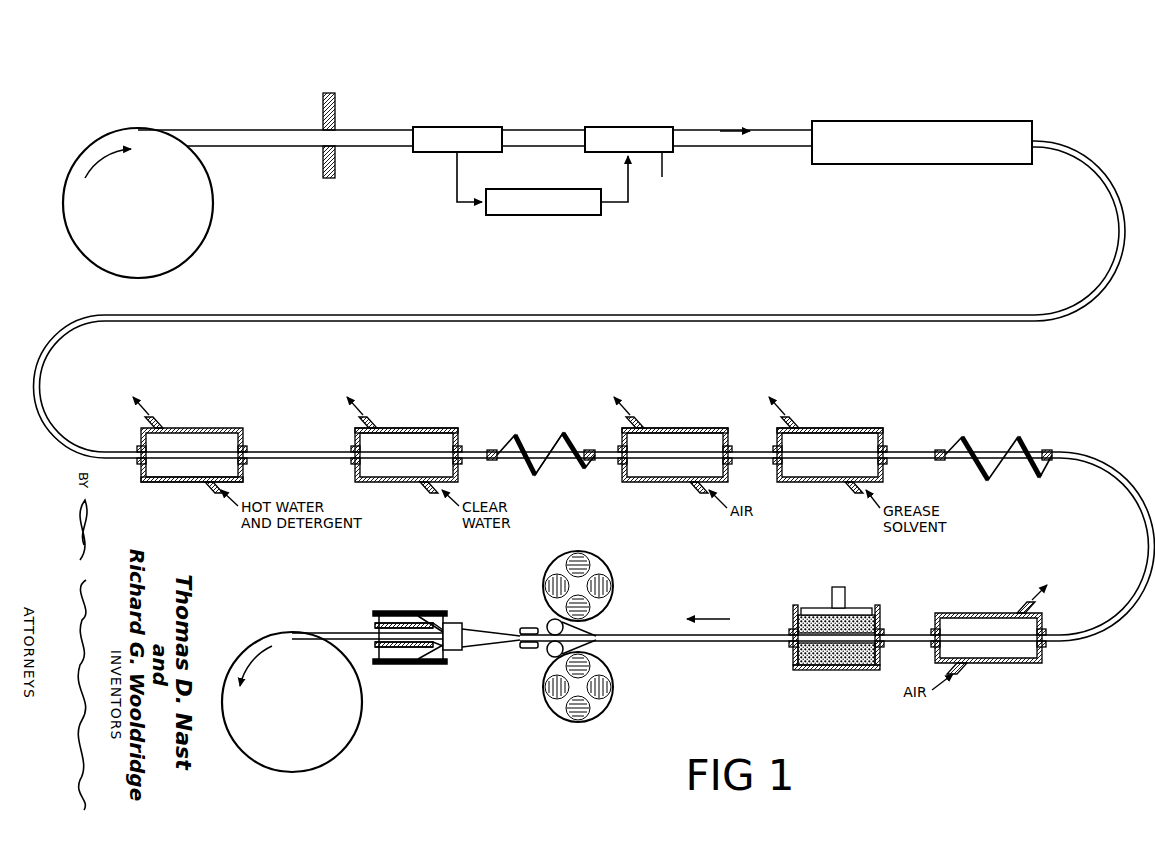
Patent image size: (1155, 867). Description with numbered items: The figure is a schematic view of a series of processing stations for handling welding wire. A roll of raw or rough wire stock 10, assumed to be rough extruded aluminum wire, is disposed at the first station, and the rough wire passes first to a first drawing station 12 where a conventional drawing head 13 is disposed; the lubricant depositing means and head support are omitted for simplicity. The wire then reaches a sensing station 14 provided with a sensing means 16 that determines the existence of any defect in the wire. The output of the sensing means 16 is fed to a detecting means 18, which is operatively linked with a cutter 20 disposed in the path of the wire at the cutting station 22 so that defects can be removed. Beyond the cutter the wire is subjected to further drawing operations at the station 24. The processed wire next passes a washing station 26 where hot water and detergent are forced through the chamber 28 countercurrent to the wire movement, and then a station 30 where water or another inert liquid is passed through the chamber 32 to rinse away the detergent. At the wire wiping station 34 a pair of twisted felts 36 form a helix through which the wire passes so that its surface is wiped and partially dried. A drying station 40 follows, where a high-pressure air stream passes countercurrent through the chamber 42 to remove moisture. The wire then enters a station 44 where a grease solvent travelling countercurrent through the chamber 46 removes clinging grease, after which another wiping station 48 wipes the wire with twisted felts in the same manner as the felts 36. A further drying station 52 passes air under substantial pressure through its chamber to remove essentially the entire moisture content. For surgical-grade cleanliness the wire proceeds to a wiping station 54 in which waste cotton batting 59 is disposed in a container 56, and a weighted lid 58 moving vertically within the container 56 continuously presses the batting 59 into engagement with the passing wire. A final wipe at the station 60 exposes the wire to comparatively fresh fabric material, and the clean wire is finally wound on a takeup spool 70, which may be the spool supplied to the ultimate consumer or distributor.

The wire stock 10 is at (198, 128).
The first drawing station 12 is at (347, 111).
The drawing head 13 is at (322, 108).
The sensing station 14 is at (475, 117).
The sensing means 16 is at (424, 155).
The detecting means 18 is at (566, 216).
The cutter 20 is at (639, 182).
The cutting station 22 is at (639, 112).
The further drawing station 24 is at (806, 112).
The washing station 26 is at (192, 451).
The chamber 28 is at (176, 485).
The rinsing station 30 is at (411, 428).
The chamber 32 is at (446, 428).
The wire wiping station 34 is at (541, 452).
The twisted felts 36 is at (538, 473).
The drying station 40 is at (673, 429).
The chamber 42 is at (697, 428).
The grease solvent washing station 44 is at (842, 429).
The chamber 46 is at (882, 434).
The wiping station 48 is at (987, 435).
The further drying station 52 is at (990, 611).
The wiping station 54 is at (912, 640).
The container 56 is at (864, 670).
The weighted lid 58 is at (818, 607).
The cotton batting 59 is at (829, 672).
The final wipe station 60 is at (629, 590).
The takeup spool 70 is at (360, 735).